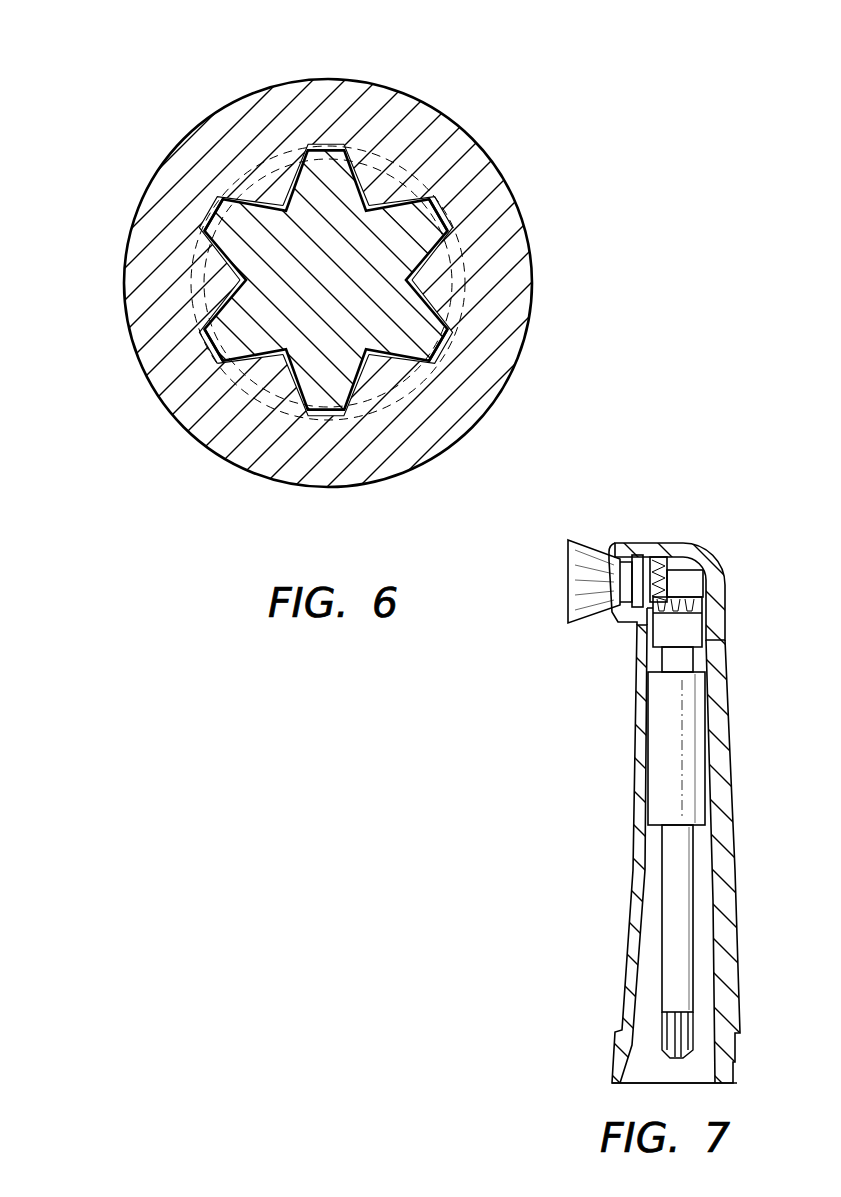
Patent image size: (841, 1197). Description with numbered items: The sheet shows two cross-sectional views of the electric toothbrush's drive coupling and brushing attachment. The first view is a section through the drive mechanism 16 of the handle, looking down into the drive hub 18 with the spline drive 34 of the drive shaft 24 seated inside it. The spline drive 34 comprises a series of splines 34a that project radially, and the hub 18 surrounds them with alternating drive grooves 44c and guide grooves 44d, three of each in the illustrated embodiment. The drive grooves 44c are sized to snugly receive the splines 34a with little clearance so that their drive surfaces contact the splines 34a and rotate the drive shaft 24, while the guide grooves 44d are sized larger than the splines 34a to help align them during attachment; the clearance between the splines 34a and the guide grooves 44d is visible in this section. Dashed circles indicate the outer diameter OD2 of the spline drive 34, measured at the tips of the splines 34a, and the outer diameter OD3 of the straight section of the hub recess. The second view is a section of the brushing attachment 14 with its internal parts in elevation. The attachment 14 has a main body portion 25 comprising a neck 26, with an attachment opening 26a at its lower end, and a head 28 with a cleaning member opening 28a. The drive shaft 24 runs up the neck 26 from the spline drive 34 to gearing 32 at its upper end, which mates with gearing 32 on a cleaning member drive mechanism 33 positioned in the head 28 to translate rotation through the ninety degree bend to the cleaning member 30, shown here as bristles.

In FIG. 7, the brushing attachment 14 is at (551, 742).
In FIG. 6, the drive mechanism 16 is at (114, 139).
In FIG. 6, the drive hub 18 is at (447, 163).
In FIG. 6, the drive shaft 24 is at (382, 258).
In FIG. 7, the drive shaft 24 is at (690, 750).
In FIG. 7, the main body portion 25 is at (638, 858).
In FIG. 7, the neck 26 is at (723, 890).
In FIG. 7, the attachment opening 26a is at (643, 1072).
In FIG. 7, the head 28 is at (683, 543).
In FIG. 7, the cleaning member opening 28a is at (620, 555).
In FIG. 7, the cleaning member 30 is at (582, 550).
In FIG. 7, the gearing 32 is at (663, 570).
In FIG. 7, the cleaning member drive mechanism 33 is at (638, 557).
In FIG. 7, the spline drive 34 is at (703, 1032).
In FIG. 6, the splines 34a is at (333, 173).
In FIG. 6, the drive grooves 44c is at (253, 205).
In FIG. 6, the guide grooves 44d is at (325, 150).
In FIG. 6, the outer diameter of the spline drive OD2 is at (395, 160).
In FIG. 6, the outer diameter of the straight section OD3 is at (248, 397).